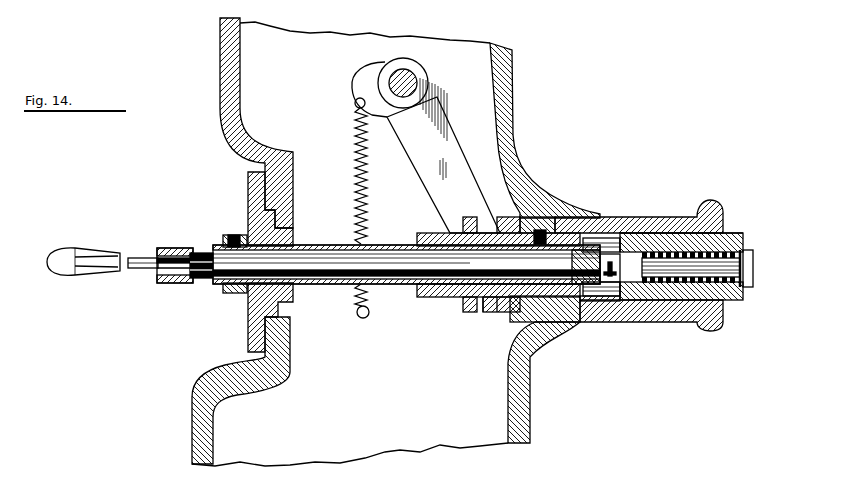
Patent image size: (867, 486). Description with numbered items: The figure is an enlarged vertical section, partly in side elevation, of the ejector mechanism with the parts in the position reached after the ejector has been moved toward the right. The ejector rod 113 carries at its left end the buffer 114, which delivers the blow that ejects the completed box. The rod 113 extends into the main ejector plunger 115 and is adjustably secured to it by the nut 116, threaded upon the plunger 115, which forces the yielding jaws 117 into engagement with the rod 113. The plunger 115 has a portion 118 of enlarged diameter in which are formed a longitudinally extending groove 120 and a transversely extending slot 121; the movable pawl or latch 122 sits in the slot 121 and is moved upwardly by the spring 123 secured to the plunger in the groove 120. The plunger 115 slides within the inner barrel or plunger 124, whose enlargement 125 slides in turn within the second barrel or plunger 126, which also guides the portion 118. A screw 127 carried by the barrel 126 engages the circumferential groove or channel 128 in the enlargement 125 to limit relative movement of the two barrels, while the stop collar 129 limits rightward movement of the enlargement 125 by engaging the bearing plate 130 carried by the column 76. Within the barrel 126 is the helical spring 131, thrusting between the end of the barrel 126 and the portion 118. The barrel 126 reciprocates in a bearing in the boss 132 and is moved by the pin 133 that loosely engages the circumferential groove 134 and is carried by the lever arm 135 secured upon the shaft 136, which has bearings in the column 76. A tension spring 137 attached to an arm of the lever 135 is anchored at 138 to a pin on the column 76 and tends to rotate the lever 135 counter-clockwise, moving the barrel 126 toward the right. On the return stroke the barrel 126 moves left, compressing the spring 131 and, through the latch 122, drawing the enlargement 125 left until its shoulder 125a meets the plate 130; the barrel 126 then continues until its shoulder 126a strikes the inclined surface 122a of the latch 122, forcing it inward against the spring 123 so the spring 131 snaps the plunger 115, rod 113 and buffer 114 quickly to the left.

The column 76 is at (218, 58).
The ejector rod 113 is at (136, 256).
The buffer 114 is at (55, 245).
The main ejector plunger 115 is at (383, 290).
The nut 116 is at (182, 246).
The yielding jaws 117 is at (163, 246).
The portion of enlarged diameter 118 is at (507, 313).
The longitudinally extending groove 120 is at (596, 284).
The transversely extending slot 121 is at (608, 283).
The movable pawl or latch 122 is at (592, 237).
The inclined surface of the latch 122a is at (637, 235).
The spring 123 is at (592, 300).
The inner barrel or plunger 124 is at (323, 291).
The enlargement 125 is at (548, 233).
The shoulder 125a is at (407, 179).
The second barrel or plunger 126 is at (675, 236).
The shoulder 126a is at (670, 232).
The screw 127 is at (538, 230).
The circumferential groove or channel 128 is at (502, 179).
The stop collar 129 is at (230, 234).
The bearing plate 130 is at (247, 336).
The helical spring 131 is at (680, 292).
The boss 132 is at (645, 300).
The pin 133 is at (463, 312).
The circumferential groove 134 is at (500, 313).
The lever arm 135 is at (483, 75).
The shaft 136 is at (403, 88).
The tension spring 137 is at (352, 128).
The spring anchoring point 138 is at (357, 320).